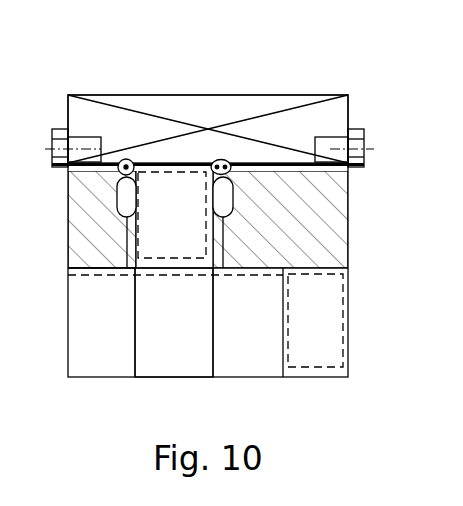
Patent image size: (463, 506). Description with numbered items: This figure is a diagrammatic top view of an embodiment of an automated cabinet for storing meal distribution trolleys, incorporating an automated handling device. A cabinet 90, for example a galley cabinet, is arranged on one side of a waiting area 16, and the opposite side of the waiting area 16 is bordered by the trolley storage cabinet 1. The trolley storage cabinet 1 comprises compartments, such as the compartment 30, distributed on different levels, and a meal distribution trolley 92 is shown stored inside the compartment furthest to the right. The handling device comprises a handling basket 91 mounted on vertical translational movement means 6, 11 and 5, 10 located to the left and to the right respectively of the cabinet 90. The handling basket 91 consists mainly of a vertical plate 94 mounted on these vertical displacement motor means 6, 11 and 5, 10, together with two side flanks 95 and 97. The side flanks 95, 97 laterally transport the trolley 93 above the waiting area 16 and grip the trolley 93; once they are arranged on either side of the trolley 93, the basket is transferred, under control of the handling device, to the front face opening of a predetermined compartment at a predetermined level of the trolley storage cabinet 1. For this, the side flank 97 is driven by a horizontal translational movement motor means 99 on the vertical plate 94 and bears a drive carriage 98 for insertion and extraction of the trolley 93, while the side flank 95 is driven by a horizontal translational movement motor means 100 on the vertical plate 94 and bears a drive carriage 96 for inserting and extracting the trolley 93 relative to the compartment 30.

The trolley storage cabinet 1 is at (345, 363).
The vertical translational movement means 5 is at (362, 140).
The vertical translational movement means 6 is at (86, 138).
The vertical translational movement means 10 is at (356, 168).
The vertical translational movement means 11 is at (53, 170).
The waiting area 16 is at (115, 172).
The compartment 30 is at (160, 339).
The cabinet 90 is at (223, 92).
The handling basket 91 is at (117, 238).
The meal distribution trolley 92 is at (342, 306).
The trolley 93 is at (160, 225).
The vertical plate 94 is at (198, 163).
The side flank 95 is at (218, 248).
The drive carriage 96 is at (224, 193).
The side flank 97 is at (125, 260).
The drive carriage 98 is at (125, 215).
The horizontal translational movement motor means 99 is at (132, 170).
The horizontal translational movement motor means 100 is at (227, 160).